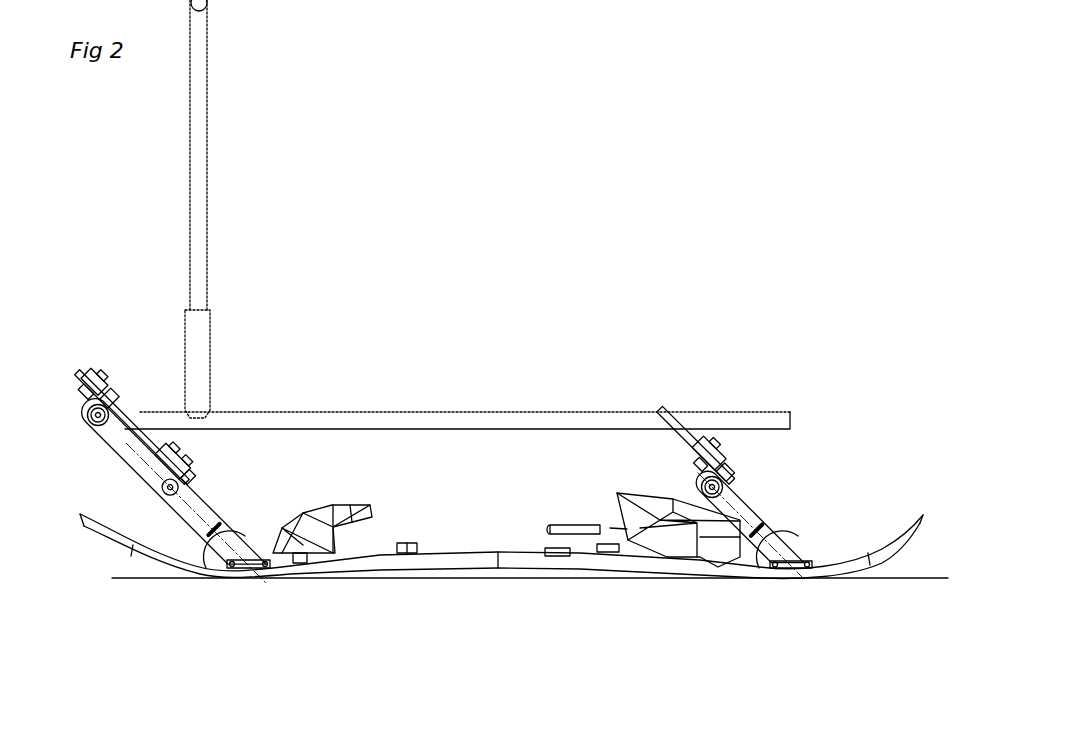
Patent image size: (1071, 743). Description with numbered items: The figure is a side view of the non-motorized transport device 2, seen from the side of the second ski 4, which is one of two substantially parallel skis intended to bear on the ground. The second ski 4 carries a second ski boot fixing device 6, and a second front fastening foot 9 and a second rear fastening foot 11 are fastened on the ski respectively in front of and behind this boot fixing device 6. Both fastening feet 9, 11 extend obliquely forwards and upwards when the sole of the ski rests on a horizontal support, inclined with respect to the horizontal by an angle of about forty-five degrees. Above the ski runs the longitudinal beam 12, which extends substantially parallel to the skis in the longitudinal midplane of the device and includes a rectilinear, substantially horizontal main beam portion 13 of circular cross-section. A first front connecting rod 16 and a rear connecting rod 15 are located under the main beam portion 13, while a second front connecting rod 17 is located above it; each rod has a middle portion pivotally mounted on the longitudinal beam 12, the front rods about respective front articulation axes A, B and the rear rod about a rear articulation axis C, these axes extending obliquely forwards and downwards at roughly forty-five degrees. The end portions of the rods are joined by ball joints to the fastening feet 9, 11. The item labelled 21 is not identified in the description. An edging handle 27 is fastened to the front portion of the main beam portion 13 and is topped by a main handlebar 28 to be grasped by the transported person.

The non-motorized transport device 2 is at (475, 306).
The second ski 4 is at (468, 563).
The second ski boot fixing device 6 is at (355, 504).
The second front fastening foot 9 is at (137, 458).
The second rear fastening foot 11 is at (782, 540).
The longitudinal beam 12 is at (370, 412).
The main beam portion 13 is at (515, 428).
The rear connecting rod 15 is at (735, 476).
The first front connecting rod 16 is at (132, 415).
The second front connecting rod 17 is at (88, 387).
The rear rail 21 is at (683, 425).
The edging handle 27 is at (205, 195).
The main handlebar 28 is at (212, 5).
The front articulation axis A is at (178, 434).
The front articulation axis B is at (112, 370).
The rear articulation axis C is at (720, 434).